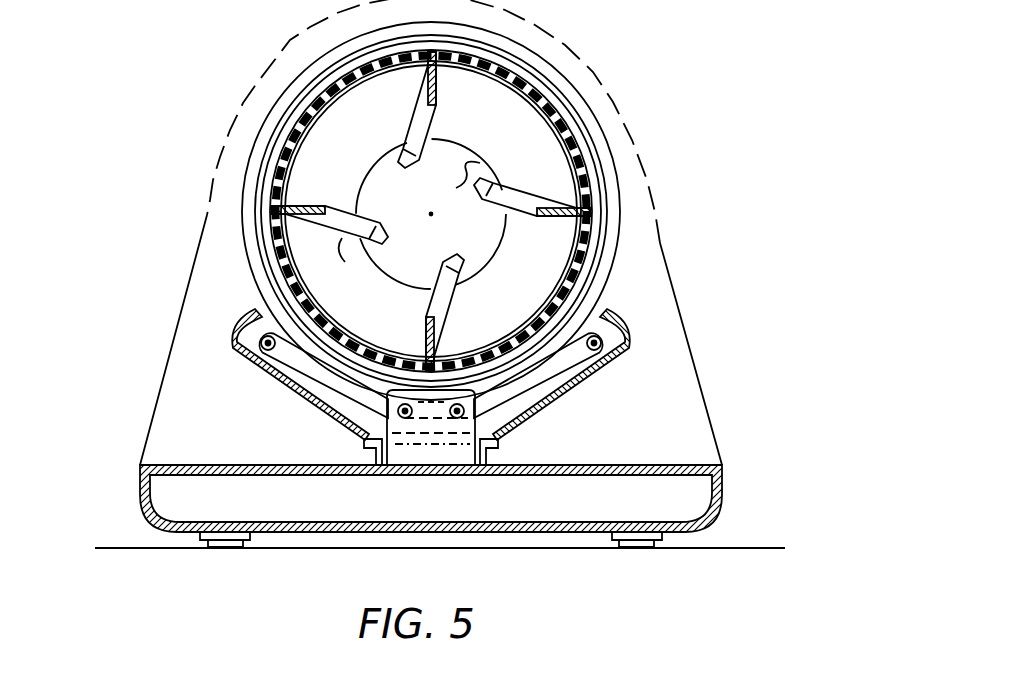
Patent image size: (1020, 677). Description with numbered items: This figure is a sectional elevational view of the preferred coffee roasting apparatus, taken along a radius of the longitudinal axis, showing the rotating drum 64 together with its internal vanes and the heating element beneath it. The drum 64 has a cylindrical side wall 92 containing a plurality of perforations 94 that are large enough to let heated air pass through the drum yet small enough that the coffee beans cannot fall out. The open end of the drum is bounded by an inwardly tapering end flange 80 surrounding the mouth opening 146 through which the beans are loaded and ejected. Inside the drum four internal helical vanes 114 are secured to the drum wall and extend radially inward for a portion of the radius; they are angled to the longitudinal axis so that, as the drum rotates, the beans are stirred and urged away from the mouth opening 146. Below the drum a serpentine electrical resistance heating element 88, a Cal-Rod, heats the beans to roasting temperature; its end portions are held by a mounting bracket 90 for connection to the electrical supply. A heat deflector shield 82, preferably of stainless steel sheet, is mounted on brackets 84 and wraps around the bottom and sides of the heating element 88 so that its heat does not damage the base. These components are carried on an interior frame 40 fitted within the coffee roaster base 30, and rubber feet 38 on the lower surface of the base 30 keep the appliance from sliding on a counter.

The coffee roaster base 30 is at (728, 520).
The rubber feet 38 is at (227, 552).
The interior frame 40 is at (613, 466).
The drum 64 is at (232, 260).
The inwardly tapering end flange 80 is at (565, 270).
The heat deflector shield 82 is at (297, 394).
The brackets 84 is at (377, 453).
The serpentine electrical resistance heating element 88 is at (567, 363).
The mounting bracket 90 is at (415, 460).
The cylindrical side wall 92 is at (600, 166).
The perforations 94 is at (550, 107).
The internal helical vanes 114 is at (437, 108).
The opening 146 is at (456, 188).